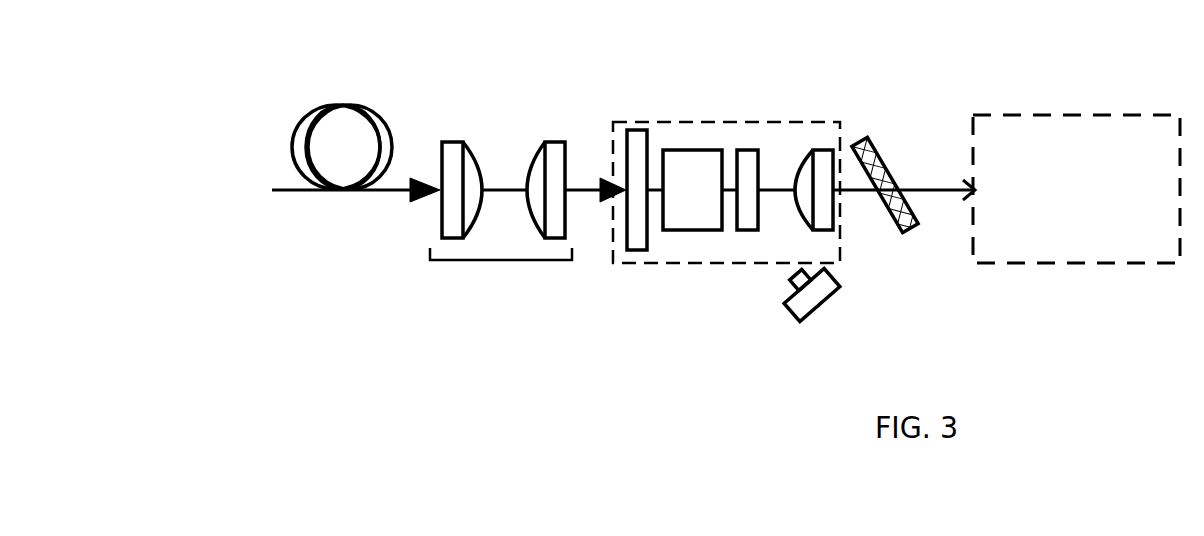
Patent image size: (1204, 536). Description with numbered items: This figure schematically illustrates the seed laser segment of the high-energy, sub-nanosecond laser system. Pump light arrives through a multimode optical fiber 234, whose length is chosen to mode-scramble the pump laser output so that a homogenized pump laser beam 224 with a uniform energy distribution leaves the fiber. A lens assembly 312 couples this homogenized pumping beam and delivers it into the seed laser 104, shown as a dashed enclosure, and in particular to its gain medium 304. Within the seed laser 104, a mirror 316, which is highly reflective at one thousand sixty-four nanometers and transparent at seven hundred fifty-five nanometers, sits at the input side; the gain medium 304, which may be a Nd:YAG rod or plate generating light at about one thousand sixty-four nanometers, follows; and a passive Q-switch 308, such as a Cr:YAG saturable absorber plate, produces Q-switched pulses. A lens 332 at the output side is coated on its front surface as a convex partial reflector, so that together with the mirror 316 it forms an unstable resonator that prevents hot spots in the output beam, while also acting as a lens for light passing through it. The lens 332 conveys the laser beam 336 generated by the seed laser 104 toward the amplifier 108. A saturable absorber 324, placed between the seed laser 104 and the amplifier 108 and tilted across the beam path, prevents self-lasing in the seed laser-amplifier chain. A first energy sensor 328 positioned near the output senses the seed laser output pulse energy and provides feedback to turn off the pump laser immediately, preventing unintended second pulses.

The second multimode optical fiber 234 is at (301, 128).
The homogenized pump laser beam 224 is at (413, 197).
The lens assembly 312 is at (482, 260).
The seed laser 104 is at (693, 263).
The mirror 316 is at (625, 122).
The gain medium 304 is at (697, 150).
The passive Q-switch 308 is at (747, 157).
The lens 332 is at (833, 208).
The laser beam 336 is at (910, 187).
The saturable absorber 324 is at (875, 147).
The first energy sensor 328 is at (828, 305).
The amplifier 108 is at (1097, 203).